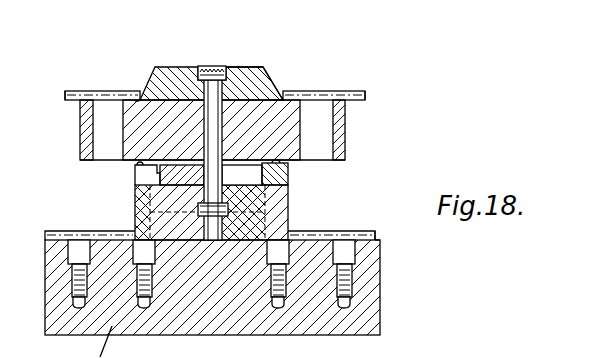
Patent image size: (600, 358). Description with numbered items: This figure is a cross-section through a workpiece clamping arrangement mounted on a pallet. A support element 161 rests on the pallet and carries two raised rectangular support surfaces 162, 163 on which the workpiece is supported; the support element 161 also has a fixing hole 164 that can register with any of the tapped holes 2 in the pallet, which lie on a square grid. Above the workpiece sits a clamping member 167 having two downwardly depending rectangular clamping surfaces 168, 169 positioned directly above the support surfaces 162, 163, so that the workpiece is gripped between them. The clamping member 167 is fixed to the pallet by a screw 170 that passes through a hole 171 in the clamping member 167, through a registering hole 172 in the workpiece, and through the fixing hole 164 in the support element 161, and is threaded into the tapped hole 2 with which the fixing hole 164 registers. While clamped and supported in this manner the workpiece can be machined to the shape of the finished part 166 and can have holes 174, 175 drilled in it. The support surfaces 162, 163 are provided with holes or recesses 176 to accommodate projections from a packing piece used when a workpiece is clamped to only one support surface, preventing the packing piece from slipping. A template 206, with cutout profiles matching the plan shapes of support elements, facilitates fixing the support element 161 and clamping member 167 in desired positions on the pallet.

The tapped hole 2 is at (82, 231).
The support element 161 is at (294, 228).
The support surface 162 is at (137, 165).
The support surface 163 is at (288, 164).
The fixing hole 164 is at (242, 176).
The finished part 166 is at (338, 142).
The clamping member 167 is at (272, 87).
The clamping surface 168 is at (138, 99).
The clamping surface 169 is at (301, 94).
The screw 170 is at (212, 66).
The hole 171 is at (232, 79).
The registering hole 172 is at (196, 112).
The hole 174 is at (93, 126).
The hole 175 is at (330, 128).
The holes or recesses 176 is at (137, 184).
The template 206 is at (351, 95).